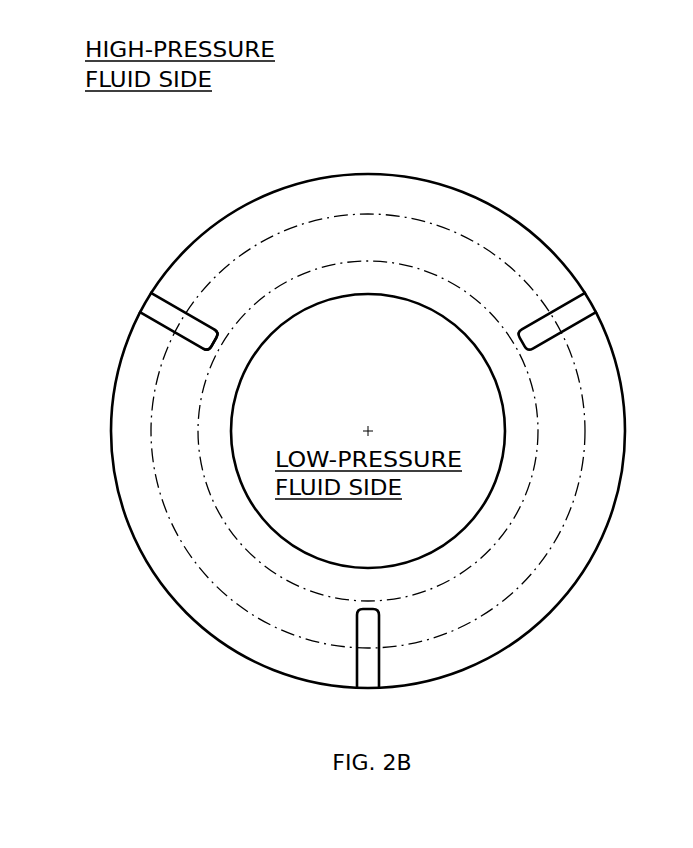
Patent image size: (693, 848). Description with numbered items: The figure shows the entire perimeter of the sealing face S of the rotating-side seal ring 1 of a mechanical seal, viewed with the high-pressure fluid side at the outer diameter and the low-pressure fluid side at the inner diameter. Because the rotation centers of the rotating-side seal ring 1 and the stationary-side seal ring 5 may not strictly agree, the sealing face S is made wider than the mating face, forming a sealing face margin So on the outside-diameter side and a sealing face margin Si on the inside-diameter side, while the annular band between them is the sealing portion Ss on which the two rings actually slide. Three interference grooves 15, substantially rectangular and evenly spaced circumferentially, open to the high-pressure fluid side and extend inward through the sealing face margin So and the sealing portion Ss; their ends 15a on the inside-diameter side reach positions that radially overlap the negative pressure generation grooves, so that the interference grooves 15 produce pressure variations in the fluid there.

The rotating-side seal ring 1 is at (397, 173).
The stationary-side seal ring 5 is at (435, 220).
The interference grooves 15 is at (158, 312).
The ends on the inside-diameter side 15a is at (218, 343).
The sealing face S is at (315, 198).
The sealing portion Ss is at (460, 245).
The sealing face margin on the outside-diameter side So is at (535, 247).
The sealing face margin on the inside-diameter side Si is at (472, 326).